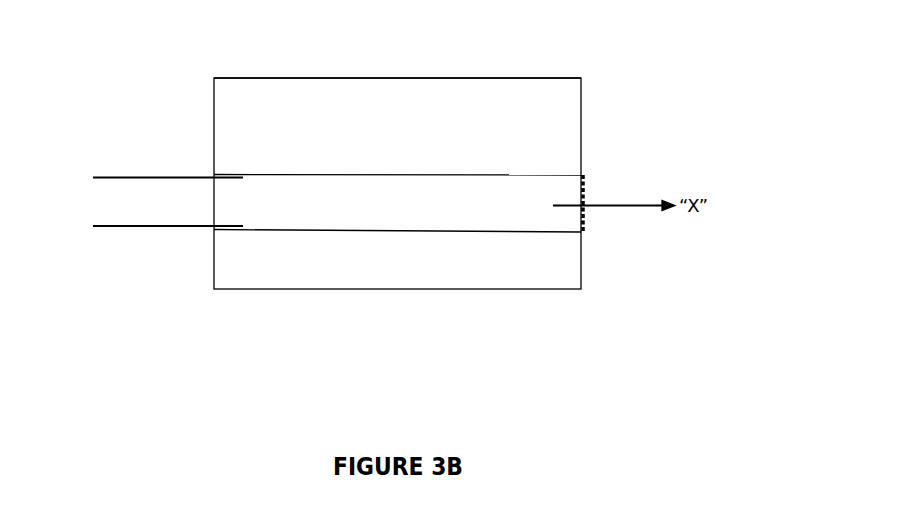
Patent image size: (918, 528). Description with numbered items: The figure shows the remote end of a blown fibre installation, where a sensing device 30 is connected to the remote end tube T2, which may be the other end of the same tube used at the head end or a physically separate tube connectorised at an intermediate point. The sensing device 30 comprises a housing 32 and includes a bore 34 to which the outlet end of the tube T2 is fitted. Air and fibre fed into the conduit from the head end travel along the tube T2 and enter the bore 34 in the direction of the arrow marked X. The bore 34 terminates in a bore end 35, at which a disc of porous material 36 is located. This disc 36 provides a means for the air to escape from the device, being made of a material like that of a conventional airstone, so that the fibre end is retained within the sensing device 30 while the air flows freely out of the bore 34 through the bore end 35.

The sensing device 30 is at (417, 295).
The housing 32 is at (257, 77).
The bore 34 is at (500, 223).
The bore end 35 is at (589, 222).
The disc of porous material 36 is at (580, 186).
The remote end tube T2 is at (108, 172).